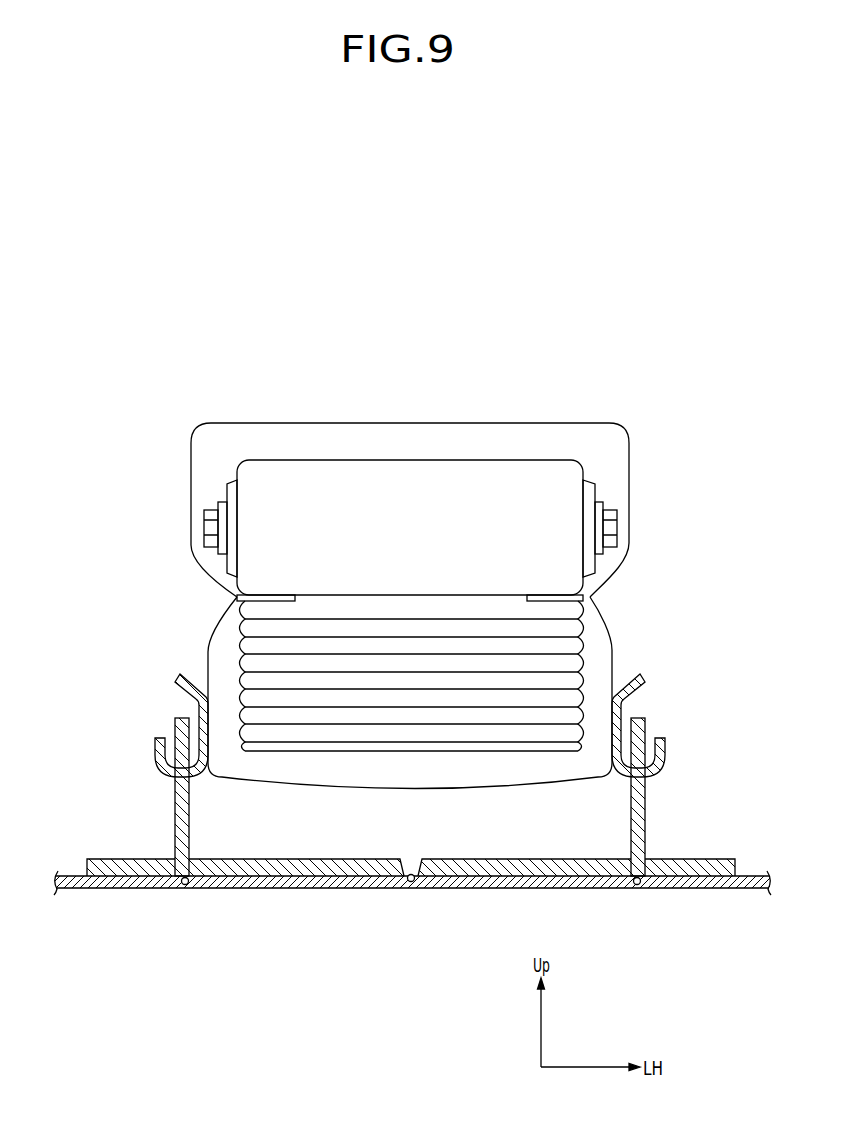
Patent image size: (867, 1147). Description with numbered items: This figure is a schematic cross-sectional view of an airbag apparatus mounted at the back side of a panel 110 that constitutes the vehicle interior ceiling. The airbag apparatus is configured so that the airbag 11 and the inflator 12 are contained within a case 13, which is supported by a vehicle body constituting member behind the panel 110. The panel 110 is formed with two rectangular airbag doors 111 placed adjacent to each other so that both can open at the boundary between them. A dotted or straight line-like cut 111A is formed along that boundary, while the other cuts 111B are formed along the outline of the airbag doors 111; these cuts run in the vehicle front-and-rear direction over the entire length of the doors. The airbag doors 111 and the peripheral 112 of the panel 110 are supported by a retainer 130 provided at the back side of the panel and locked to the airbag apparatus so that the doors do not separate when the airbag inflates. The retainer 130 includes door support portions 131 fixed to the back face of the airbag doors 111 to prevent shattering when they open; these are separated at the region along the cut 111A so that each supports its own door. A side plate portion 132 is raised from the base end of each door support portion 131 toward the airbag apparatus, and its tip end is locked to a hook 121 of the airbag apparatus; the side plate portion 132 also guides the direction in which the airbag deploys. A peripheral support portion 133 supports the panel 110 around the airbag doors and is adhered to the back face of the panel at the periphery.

The airbag 11 is at (239, 673).
The inflator 12 is at (236, 468).
The case 13 is at (190, 547).
The panel 110 is at (405, 918).
The airbag door 111 is at (306, 895).
The cut 111A is at (411, 882).
The cut 111B is at (185, 885).
The peripheral 112 is at (148, 894).
The hook 121 is at (155, 741).
The retainer 130 is at (403, 797).
The door support portion 131 is at (319, 859).
The side plate portion 132 is at (175, 816).
The peripheral support portion 133 is at (97, 859).